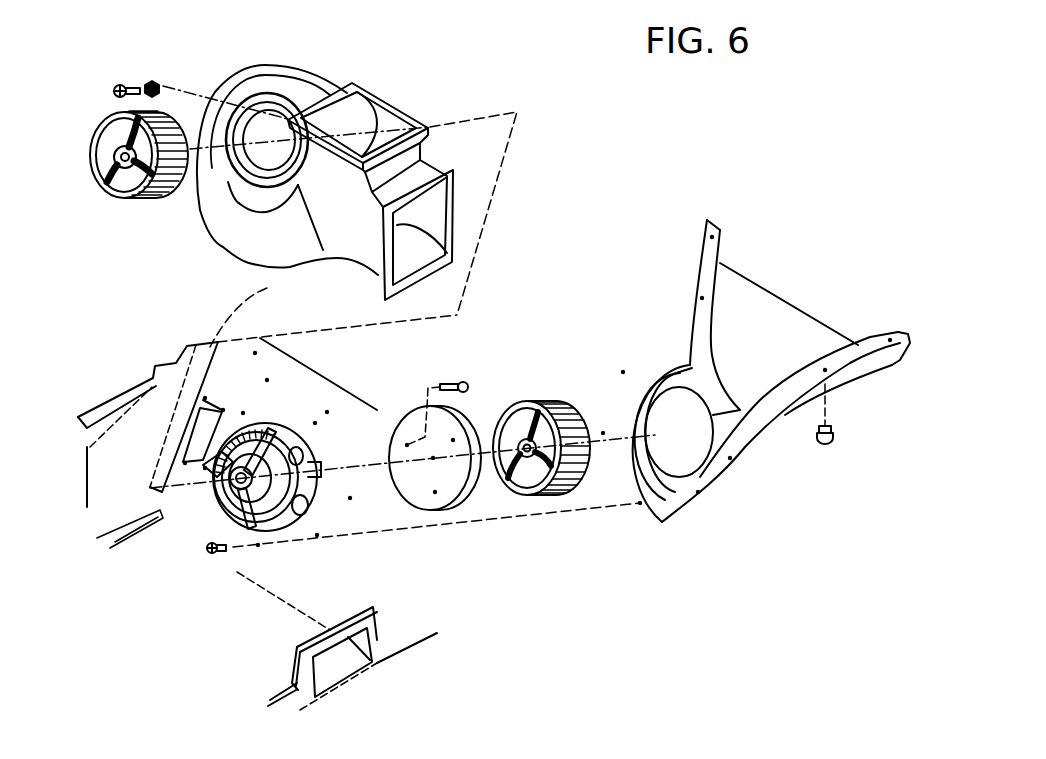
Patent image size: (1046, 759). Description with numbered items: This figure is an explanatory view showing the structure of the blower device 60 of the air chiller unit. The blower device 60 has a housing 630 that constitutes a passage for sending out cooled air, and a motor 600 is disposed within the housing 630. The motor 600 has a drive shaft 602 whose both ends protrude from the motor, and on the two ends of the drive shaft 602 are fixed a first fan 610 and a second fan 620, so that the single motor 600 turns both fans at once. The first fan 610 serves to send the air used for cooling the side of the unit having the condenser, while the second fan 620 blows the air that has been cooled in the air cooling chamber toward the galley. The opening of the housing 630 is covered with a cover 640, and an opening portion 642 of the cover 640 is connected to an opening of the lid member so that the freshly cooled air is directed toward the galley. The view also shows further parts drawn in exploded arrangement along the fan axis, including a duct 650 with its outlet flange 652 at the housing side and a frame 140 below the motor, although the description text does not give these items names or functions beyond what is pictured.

The blower device 60 is at (476, 88).
The first fan 610 is at (114, 193).
The housing 630 is at (264, 242).
The duct 650 is at (378, 113).
The outlet flange 652 is at (417, 260).
The drive shaft 602 is at (160, 512).
The motor 600 is at (218, 494).
The second fan 620 is at (518, 410).
The cover 640 is at (755, 433).
The opening portion 642 is at (718, 246).
The opening frame 140 is at (323, 588).